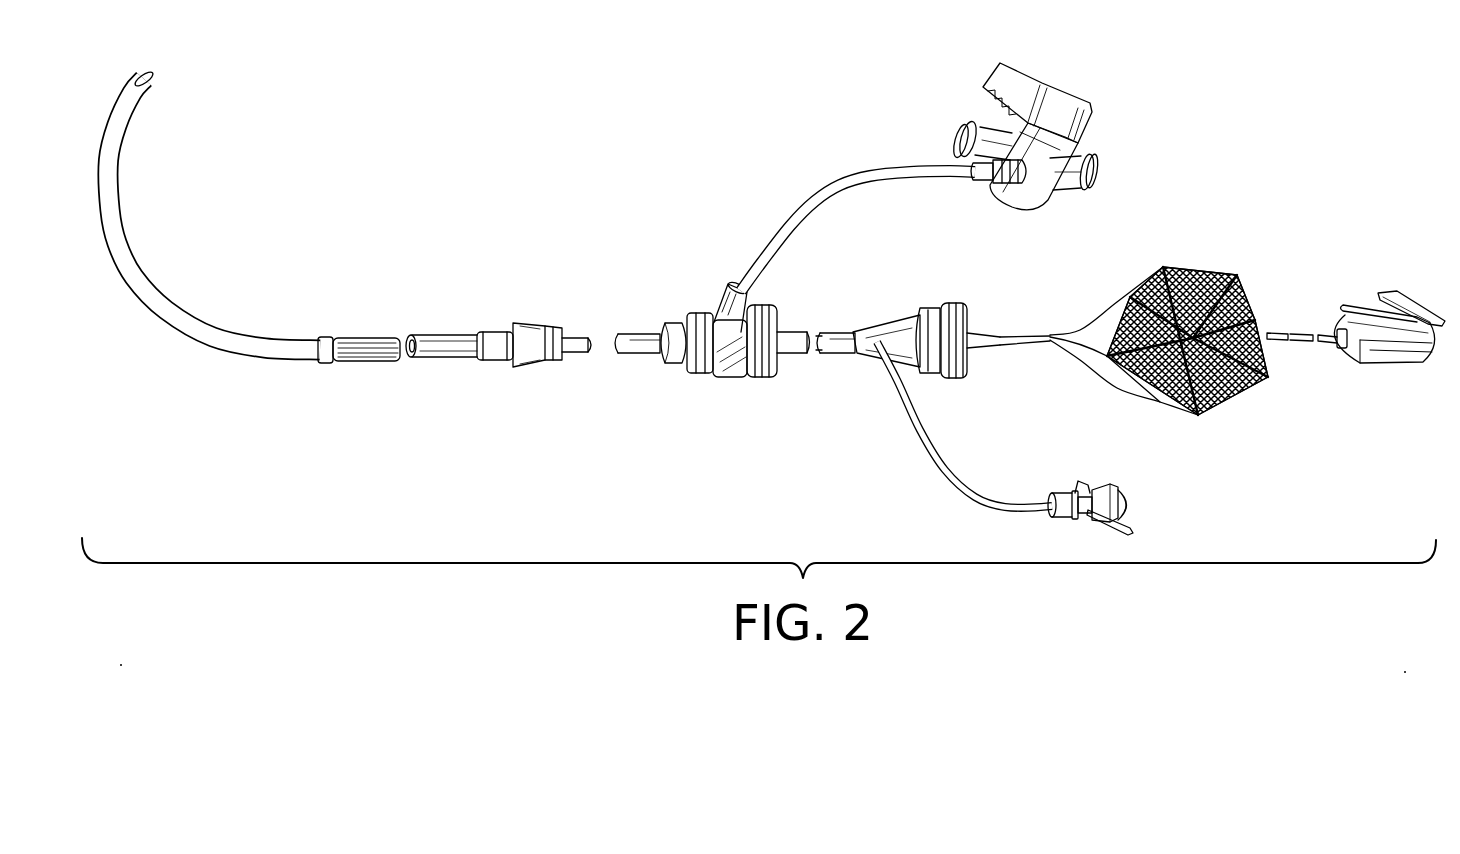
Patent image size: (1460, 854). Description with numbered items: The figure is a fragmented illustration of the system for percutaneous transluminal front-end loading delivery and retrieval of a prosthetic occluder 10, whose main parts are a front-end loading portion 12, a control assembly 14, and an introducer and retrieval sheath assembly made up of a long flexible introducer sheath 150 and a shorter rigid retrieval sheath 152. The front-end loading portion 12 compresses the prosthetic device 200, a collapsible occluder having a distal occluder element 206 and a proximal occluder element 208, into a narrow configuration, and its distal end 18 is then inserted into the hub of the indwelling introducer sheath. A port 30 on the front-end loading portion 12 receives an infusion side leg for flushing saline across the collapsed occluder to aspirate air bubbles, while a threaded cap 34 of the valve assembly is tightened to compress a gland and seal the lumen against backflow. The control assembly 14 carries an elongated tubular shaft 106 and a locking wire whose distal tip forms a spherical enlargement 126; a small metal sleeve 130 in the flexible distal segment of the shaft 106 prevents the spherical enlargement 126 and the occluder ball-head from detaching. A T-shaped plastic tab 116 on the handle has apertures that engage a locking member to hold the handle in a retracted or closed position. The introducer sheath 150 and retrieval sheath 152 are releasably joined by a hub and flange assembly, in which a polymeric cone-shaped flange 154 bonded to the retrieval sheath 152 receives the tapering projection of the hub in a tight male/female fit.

The system for percutaneous transluminal front-end loading delivery and retrieval of 10 is at (694, 430).
The front-end loading portion 12 is at (871, 310).
The control assembly 14 is at (1392, 365).
The distal end 18 is at (834, 333).
The port 30 is at (908, 405).
The threaded cap 34 is at (947, 303).
The elongated tubular shaft 106 is at (1302, 344).
The T-shaped plastic tab 116 is at (1421, 304).
The spherical enlargement 126 is at (834, 184).
The small metal sleeve 130 is at (1284, 330).
The introducer sheath 150 is at (158, 290).
The retrieval sheath 152 is at (443, 335).
The cone-shaped flange 154 is at (523, 333).
The prosthetic device 200 is at (1174, 298).
The distal occluder element 206 is at (1182, 242).
The proximal occluder element 208 is at (1237, 273).